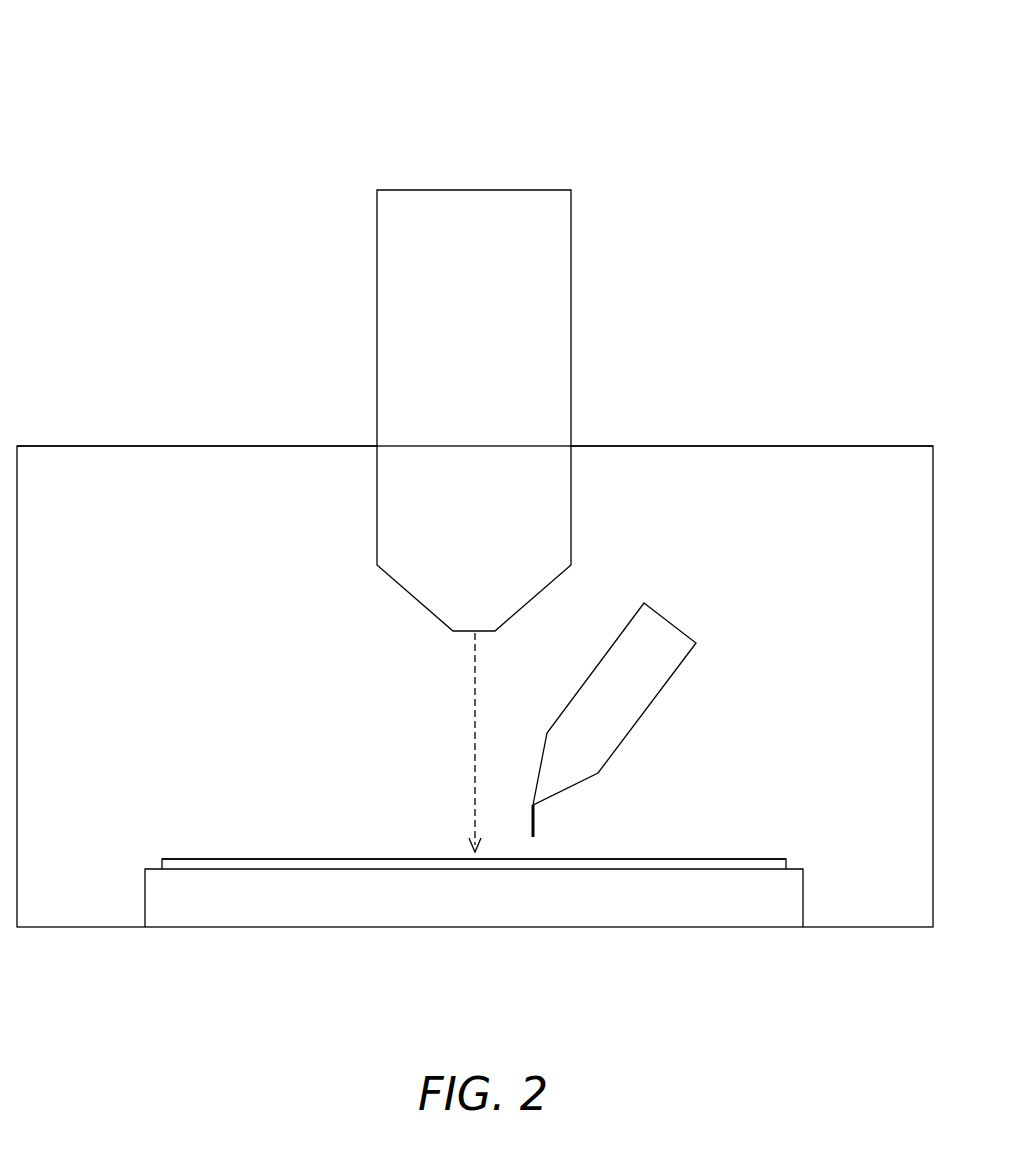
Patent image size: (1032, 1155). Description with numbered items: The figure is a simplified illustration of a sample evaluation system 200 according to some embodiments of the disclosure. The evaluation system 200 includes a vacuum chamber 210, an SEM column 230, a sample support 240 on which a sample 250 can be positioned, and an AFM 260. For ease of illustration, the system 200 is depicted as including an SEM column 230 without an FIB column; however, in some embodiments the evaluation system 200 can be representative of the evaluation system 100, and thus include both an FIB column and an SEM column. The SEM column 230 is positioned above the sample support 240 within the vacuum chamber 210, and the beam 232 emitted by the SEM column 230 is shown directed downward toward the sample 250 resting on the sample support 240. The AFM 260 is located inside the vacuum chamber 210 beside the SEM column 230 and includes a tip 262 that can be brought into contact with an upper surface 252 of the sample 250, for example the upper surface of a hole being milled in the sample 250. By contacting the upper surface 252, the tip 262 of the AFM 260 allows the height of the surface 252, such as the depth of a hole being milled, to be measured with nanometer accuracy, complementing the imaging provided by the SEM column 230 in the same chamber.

The evaluation system 100 is at (448, 74).
The sample evaluation system 200 is at (170, 290).
The vacuum chamber 210 is at (475, 470).
The SEM column 230 is at (572, 225).
The electron beam 232 is at (474, 740).
The sample support 240 is at (474, 898).
The sample 250 is at (790, 862).
The upper surface 252 is at (452, 858).
The AFM 260 is at (672, 622).
The tip 262 is at (533, 823).